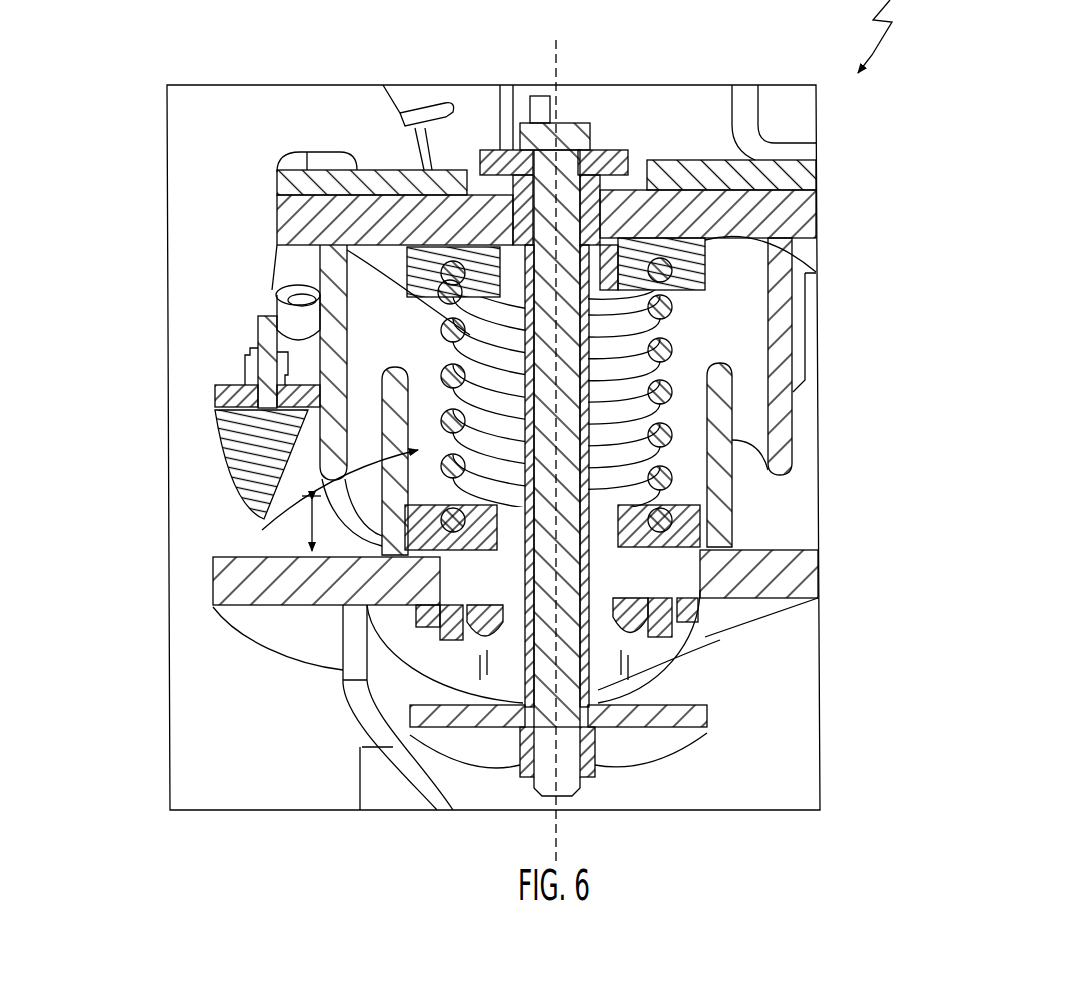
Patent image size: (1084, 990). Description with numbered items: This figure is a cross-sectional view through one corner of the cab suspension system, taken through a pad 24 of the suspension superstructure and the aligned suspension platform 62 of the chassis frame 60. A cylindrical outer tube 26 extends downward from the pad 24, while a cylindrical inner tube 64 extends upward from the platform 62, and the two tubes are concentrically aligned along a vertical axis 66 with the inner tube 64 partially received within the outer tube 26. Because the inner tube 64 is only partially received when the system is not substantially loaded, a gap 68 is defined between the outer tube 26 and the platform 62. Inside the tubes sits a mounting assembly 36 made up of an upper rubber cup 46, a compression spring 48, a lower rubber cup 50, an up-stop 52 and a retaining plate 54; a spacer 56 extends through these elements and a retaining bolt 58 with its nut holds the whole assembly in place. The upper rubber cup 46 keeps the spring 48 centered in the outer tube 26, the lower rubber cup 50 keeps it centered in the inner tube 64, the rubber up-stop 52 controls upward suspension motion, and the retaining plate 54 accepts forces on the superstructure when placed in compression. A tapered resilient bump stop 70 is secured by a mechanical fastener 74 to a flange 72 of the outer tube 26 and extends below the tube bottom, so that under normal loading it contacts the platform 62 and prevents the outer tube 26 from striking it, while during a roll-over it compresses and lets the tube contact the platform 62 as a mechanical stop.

The pad 24 is at (275, 228).
The outer tube 26 is at (276, 290).
The mechanical fastener 74 is at (258, 345).
The flange 72 is at (245, 375).
The bump stop 70 is at (217, 447).
The mounting assembly 36 is at (245, 494).
The gap 68 is at (350, 508).
The suspension platform 62 is at (213, 588).
The chassis frame 60 is at (347, 688).
The vertical axis 66 is at (560, 59).
The retaining bolt 58 is at (585, 118).
The compression spring 48 is at (674, 345).
The upper rubber cup 46 is at (793, 272).
The inner tube 64 is at (733, 435).
The lower rubber cup 50 is at (745, 551).
The up-stop 52 is at (667, 660).
The spacer 56 is at (707, 731).
The retaining plate 54 is at (658, 748).